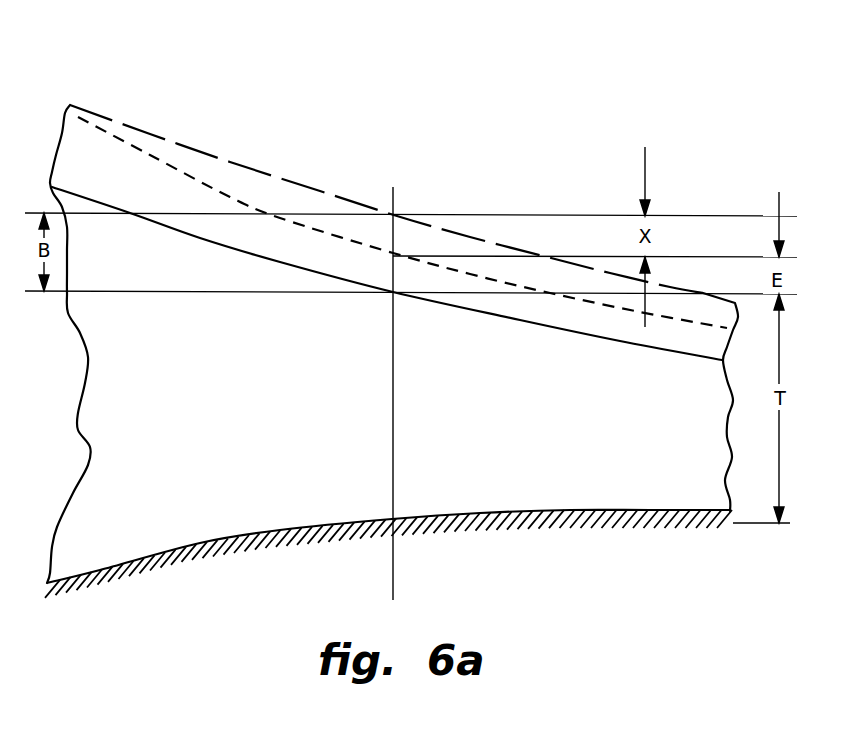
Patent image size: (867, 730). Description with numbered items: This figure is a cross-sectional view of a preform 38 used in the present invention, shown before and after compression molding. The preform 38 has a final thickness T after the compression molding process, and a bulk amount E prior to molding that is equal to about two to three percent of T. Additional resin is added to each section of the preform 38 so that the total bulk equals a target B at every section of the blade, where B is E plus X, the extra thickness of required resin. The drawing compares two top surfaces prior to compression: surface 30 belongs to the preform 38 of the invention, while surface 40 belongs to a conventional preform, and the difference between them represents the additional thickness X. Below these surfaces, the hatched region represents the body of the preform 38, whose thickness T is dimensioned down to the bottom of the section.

The surface of conventional preform 40 is at (127, 123).
The surface of preform 30 is at (235, 196).
The preform 38 is at (200, 516).